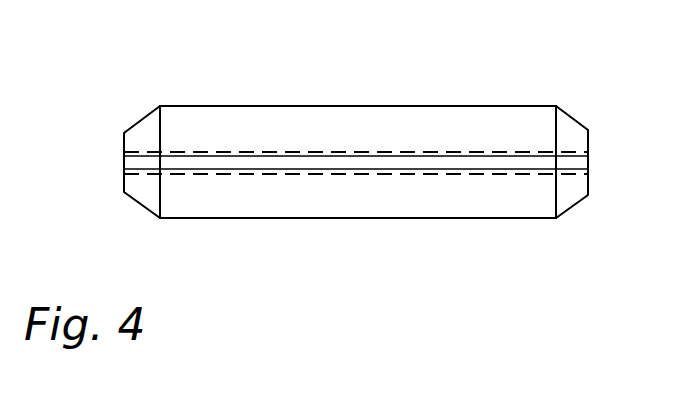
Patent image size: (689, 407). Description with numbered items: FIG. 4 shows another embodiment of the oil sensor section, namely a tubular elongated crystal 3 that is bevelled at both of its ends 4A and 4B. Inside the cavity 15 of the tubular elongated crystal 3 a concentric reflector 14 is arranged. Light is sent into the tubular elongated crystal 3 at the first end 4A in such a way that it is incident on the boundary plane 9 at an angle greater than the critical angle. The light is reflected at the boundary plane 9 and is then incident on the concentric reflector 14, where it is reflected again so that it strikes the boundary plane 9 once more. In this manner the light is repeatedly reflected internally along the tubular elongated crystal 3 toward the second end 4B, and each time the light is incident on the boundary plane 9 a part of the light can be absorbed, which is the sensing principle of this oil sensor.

The tubular elongated crystal 3 is at (182, 73).
The first end 4A is at (147, 137).
The second end 4B is at (570, 132).
The boundary plane 9 is at (485, 106).
The concentric reflector 14 is at (473, 172).
The cavity 15 is at (398, 162).